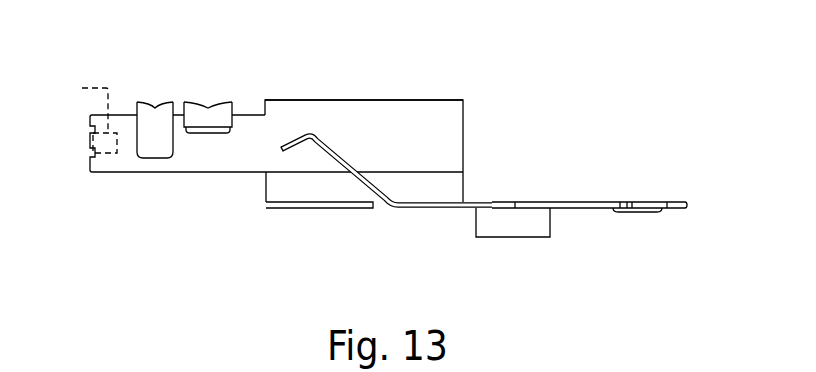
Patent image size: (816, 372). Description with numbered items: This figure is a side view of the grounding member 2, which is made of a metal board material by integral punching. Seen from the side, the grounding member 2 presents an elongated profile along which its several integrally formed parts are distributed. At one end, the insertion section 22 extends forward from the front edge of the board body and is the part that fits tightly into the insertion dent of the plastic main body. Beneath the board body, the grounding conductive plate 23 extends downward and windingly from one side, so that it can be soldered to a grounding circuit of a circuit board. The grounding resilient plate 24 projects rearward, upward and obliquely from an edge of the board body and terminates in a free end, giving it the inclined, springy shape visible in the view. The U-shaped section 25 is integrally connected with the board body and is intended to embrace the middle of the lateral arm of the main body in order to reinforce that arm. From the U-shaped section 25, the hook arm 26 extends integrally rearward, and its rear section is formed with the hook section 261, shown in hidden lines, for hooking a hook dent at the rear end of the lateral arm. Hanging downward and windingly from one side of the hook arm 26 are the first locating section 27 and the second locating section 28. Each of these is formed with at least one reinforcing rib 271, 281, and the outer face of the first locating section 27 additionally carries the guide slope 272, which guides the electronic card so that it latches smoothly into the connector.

The grounding member 2 is at (437, 112).
The insertion section 22 is at (640, 205).
The grounding conductive plate 23 is at (502, 228).
The grounding resilient plate 24 is at (315, 135).
The U-shaped section 25 is at (367, 107).
The hook arm 26 is at (125, 163).
The hook section 261 is at (79, 113).
The first locating section 27 is at (234, 137).
The reinforcing rib 271 is at (208, 108).
The guide slope 272 is at (203, 120).
The second locating section 28 is at (133, 94).
The reinforcing rib 281 is at (156, 108).